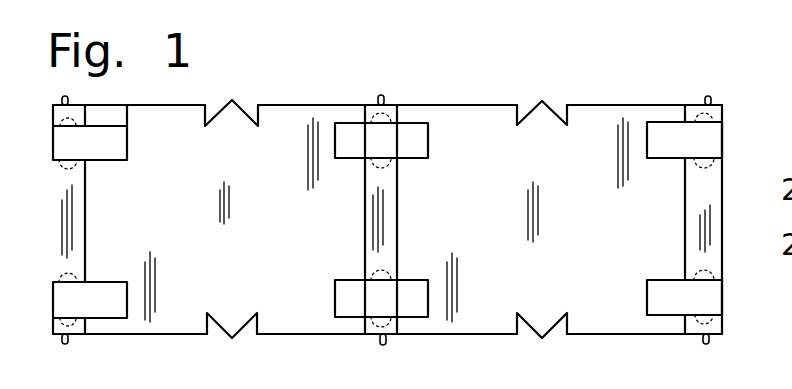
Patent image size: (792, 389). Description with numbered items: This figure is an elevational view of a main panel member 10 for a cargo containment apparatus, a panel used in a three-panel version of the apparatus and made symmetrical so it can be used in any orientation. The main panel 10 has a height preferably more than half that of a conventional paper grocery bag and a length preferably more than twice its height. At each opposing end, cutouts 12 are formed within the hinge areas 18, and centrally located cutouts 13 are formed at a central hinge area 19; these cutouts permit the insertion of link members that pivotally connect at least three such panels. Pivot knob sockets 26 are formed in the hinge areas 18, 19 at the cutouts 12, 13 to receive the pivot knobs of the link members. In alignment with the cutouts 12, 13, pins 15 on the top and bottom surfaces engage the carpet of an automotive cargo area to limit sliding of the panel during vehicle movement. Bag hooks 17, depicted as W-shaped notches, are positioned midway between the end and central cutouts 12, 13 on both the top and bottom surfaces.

The main panel member 10 is at (487, 76).
The cutouts 12 is at (115, 158).
The centrally located cutouts 13 is at (417, 155).
The pins 15 is at (70, 101).
The bag hooks 17 is at (233, 101).
The hinge areas 18 is at (86, 194).
The central hinge area 19 is at (366, 204).
The pivot knob sockets 26 is at (703, 165).